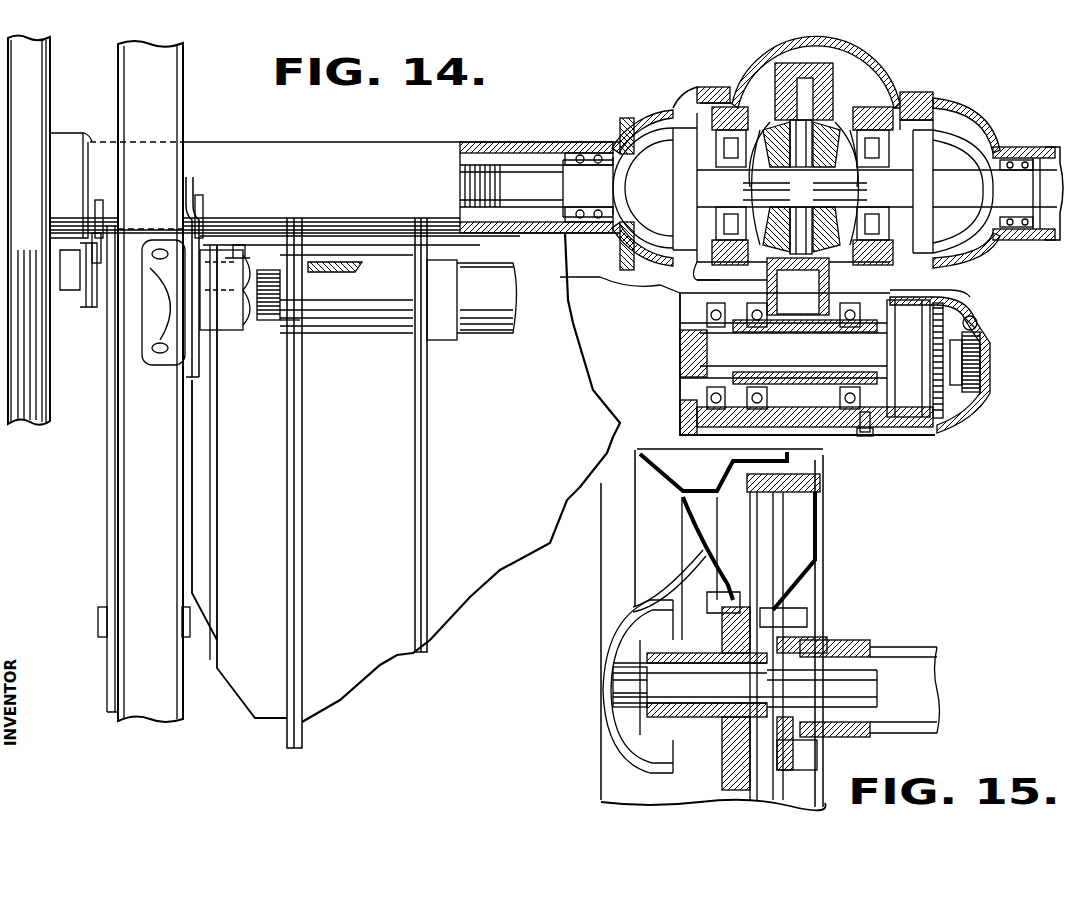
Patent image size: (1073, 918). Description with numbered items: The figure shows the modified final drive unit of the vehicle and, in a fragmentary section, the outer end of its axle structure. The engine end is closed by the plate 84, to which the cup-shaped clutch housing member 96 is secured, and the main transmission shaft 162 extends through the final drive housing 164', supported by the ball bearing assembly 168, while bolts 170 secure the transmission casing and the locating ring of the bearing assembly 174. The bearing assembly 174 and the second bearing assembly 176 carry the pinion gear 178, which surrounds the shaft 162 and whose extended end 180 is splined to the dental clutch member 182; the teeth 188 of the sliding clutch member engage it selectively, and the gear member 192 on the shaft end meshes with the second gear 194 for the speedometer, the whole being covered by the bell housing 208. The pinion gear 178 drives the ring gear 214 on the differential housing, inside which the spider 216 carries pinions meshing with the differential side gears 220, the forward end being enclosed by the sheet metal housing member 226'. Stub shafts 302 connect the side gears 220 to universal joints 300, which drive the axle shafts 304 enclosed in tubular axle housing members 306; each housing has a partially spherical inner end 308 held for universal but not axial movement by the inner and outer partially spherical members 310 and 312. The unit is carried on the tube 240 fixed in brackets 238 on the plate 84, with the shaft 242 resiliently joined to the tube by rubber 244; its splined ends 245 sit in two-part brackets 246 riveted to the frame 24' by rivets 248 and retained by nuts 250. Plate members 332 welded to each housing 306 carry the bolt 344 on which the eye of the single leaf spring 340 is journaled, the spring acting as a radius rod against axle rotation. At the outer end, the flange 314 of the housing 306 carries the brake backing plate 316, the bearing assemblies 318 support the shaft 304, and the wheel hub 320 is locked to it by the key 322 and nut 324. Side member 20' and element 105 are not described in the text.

In FIG. 14, the frame side member 20' is at (45, 230).
In FIG. 14, the frame 24' is at (109, 381).
In FIG. 14, the single leaf spring 340 is at (107, 493).
In FIG. 14, the plate members 332 is at (98, 204).
In FIG. 14, the bolt 344 is at (240, 258).
In FIG. 14, the rivets 248 is at (163, 352).
In FIG. 14, the housing 105 is at (239, 481).
In FIG. 14, the clutch housing member 96 is at (319, 483).
In FIG. 14, the plate 84 is at (421, 532).
In FIG. 14, the tubular axle housing member 306 is at (428, 143).
In FIG. 15, the tubular axle housing member 306 is at (908, 664).
In FIG. 14, the axle shaft 304 is at (462, 173).
In FIG. 15, the axle shaft 304 is at (822, 688).
In FIG. 14, the partially spherical shape 308 is at (604, 143).
In FIG. 14, the inner partially spherical member 310 is at (700, 97).
In FIG. 14, the outer partially spherical member 312 is at (628, 118).
In FIG. 14, the universal joints 300 is at (803, 187).
In FIG. 14, the stub shafts 302 is at (697, 204).
In FIG. 14, the sheet metal housing member 226' is at (819, 72).
In FIG. 14, the ring gear 214 is at (835, 81).
In FIG. 14, the spider 216 is at (830, 131).
In FIG. 14, the differential side gears 220 is at (877, 188).
In FIG. 14, the final drive housing 164' is at (725, 292).
In FIG. 14, the ball bearing assembly 168 is at (707, 311).
In FIG. 14, the bolts 170 is at (783, 416).
In FIG. 14, the bearing assembly 174 is at (866, 433).
In FIG. 14, the second bearing assembly 176 is at (745, 356).
In FIG. 14, the pinion gear 178 is at (771, 356).
In FIG. 14, the extended end of pinion gear 180 is at (859, 356).
In FIG. 14, the main transmission shaft 162 is at (783, 352).
In FIG. 14, the dental clutch member 182 is at (908, 358).
In FIG. 14, the teeth 188 is at (953, 298).
In FIG. 14, the gear member 192 is at (955, 409).
In FIG. 14, the second gear 194 is at (978, 321).
In FIG. 14, the bell housing 208 is at (985, 356).
In FIG. 14, the two-part brackets 246 is at (225, 290).
In FIG. 14, the nuts 250 is at (253, 322).
In FIG. 14, the shaft 242 is at (318, 301).
In FIG. 14, the rubber 244 is at (312, 262).
In FIG. 14, the splined ends 245 is at (280, 323).
In FIG. 14, the bracket 238 is at (443, 341).
In FIG. 14, the tube 240 is at (490, 321).
In FIG. 15, the backing plate 316 is at (800, 588).
In FIG. 15, the bearing assemblies 318 is at (810, 646).
In FIG. 15, the key 322 is at (690, 685).
In FIG. 15, the nut 324 is at (613, 701).
In FIG. 15, the hub 320 is at (638, 698).
In FIG. 15, the flange 314 is at (790, 758).